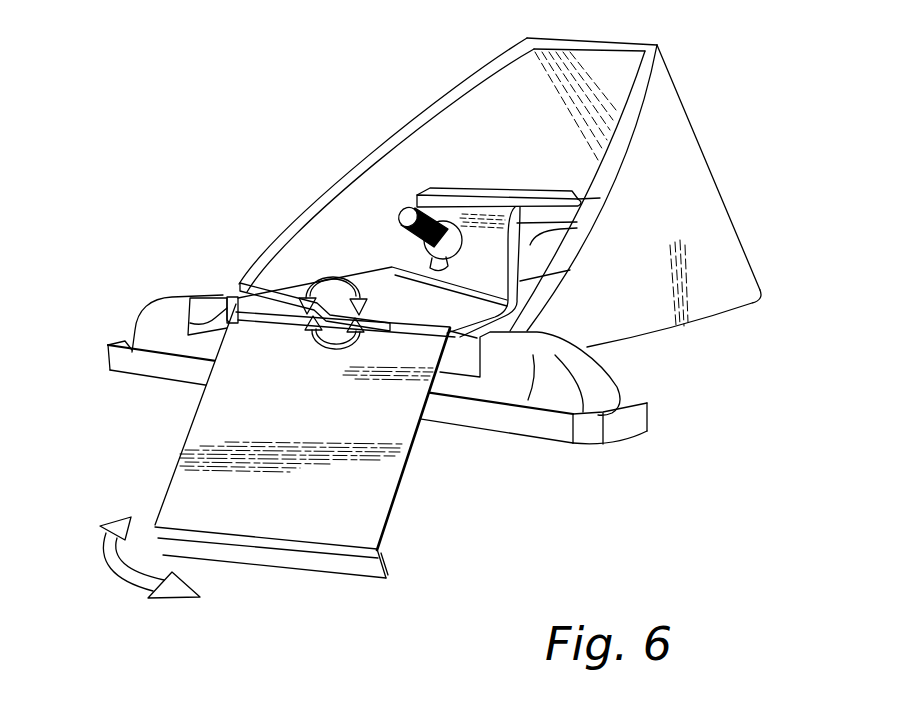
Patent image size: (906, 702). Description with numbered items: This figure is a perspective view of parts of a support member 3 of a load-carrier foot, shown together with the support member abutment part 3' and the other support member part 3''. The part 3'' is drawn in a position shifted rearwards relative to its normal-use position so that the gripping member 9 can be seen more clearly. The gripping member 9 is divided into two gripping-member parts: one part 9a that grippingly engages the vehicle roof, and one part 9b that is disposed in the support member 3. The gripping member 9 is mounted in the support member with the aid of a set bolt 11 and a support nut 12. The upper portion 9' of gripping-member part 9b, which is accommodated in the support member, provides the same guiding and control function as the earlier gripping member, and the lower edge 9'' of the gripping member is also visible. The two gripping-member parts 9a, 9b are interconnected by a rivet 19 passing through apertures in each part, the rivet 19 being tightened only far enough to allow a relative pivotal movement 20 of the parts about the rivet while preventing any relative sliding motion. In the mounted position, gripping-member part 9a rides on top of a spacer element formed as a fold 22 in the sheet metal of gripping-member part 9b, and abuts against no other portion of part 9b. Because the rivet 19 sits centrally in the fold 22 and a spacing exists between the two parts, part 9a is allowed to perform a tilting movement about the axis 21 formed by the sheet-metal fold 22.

The support member 3 is at (514, 184).
The support member abutment part 3' is at (409, 369).
The other support member part 3'' is at (706, 196).
The gripping member 9 is at (336, 427).
The upper portion of gripping-member part 9' is at (508, 242).
The lower lip of flap 9'' is at (271, 591).
The gripping-member part 9a is at (177, 470).
The gripping-member part 9b is at (384, 275).
The set bolt 11 is at (403, 213).
The support nut 12 is at (466, 218).
The rivet 19 is at (358, 266).
The relative pivotal movement 20 is at (118, 563).
The axis 21 is at (325, 270).
The fold 22 is at (313, 330).